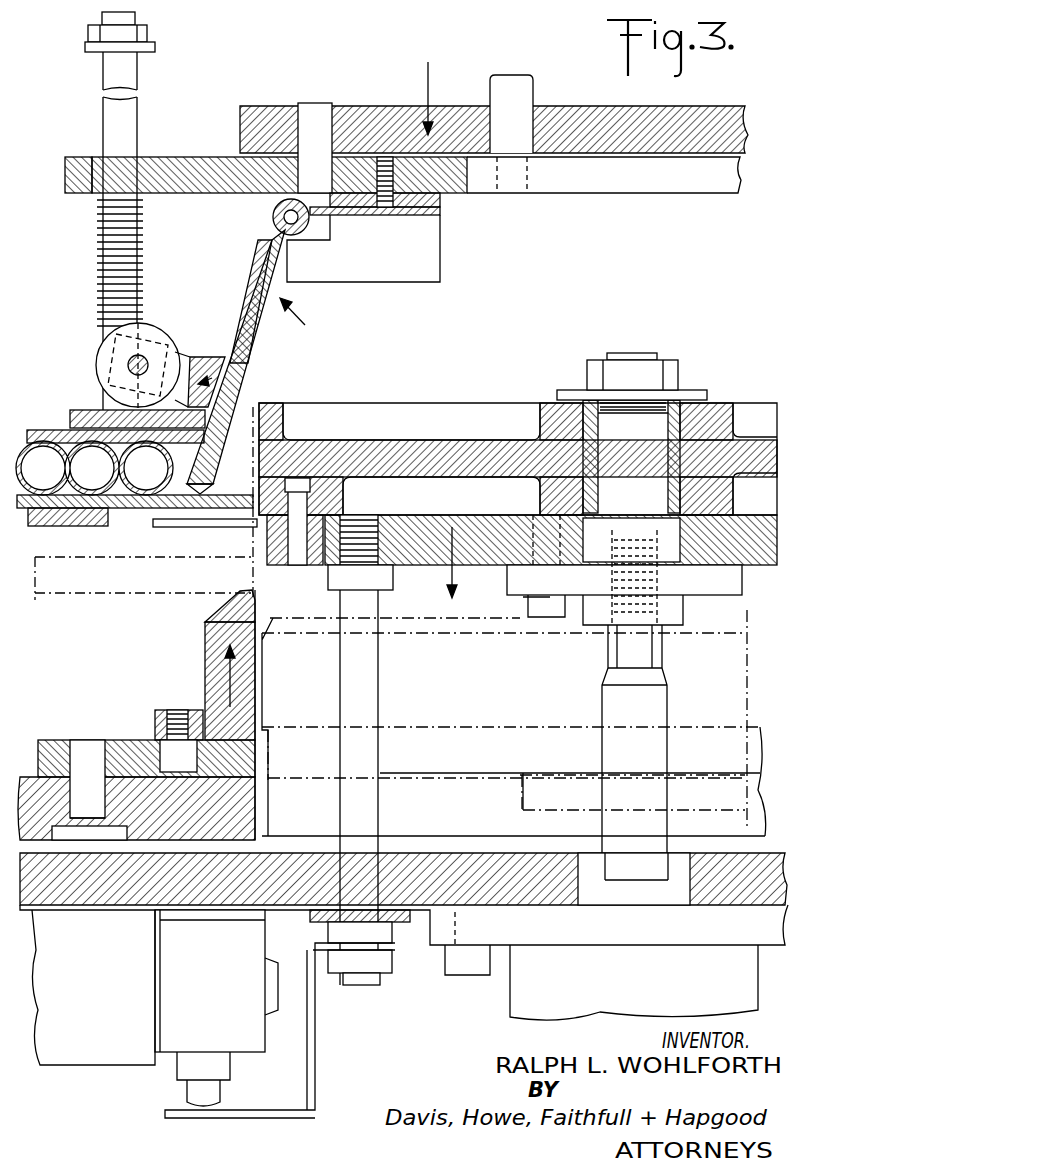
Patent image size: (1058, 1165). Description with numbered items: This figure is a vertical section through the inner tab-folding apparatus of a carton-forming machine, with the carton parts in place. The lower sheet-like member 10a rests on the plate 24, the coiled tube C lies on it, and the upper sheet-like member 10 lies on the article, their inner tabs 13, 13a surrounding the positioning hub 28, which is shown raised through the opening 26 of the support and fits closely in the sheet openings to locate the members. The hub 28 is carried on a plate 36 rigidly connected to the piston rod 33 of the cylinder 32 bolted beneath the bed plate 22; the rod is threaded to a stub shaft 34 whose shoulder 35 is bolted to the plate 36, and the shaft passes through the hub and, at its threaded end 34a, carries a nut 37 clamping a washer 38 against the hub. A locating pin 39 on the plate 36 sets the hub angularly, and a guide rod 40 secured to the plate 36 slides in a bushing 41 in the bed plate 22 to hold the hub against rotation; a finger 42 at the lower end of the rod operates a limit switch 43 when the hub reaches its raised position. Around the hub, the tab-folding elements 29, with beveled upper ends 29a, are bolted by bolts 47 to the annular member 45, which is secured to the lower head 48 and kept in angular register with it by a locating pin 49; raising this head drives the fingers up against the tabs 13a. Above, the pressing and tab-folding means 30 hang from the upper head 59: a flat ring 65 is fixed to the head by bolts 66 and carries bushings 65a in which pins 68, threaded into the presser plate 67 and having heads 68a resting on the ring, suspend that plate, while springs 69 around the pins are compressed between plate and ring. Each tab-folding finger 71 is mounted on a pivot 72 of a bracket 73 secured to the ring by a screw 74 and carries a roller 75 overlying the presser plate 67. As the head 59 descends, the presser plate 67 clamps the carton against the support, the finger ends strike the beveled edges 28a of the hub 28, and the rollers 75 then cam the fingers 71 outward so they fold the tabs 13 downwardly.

The sheet-like member 10 is at (45, 430).
The sheet-like member 10a is at (142, 515).
The inner tab 13 is at (207, 470).
The inner tab 13a is at (222, 519).
The bed plate 22 is at (283, 895).
The plate 24 is at (70, 515).
The opening 26 is at (118, 510).
The positioning hub 28 is at (335, 455).
The beveled edge 28a is at (275, 403).
The tab-folding element 29 is at (210, 642).
The beveled upper end 29a is at (222, 603).
The pressing and tab-folding means 30 is at (265, 342).
The cylinder 32 is at (520, 992).
The piston rod 33 is at (650, 706).
The stub shaft 34 is at (640, 436).
The threaded upper end 34a is at (640, 355).
The shoulder 35 is at (735, 590).
The plate 36 is at (512, 550).
The nut 37 is at (590, 370).
The washer 38 is at (555, 400).
The locating pin 39 is at (294, 565).
The guide rod 40 is at (362, 816).
The bushing 41 is at (412, 908).
The finger 42 is at (258, 1115).
The limit switch 43 is at (240, 1020).
The annular member 45 is at (80, 593).
The bolt 47 is at (180, 712).
The head 48 is at (30, 777).
The locating pin 49 is at (90, 742).
The upper head 59 is at (378, 112).
The flat ring 65 is at (218, 165).
The bushing 65a is at (66, 180).
The bolt 66 is at (532, 92).
The presser plate 67 is at (90, 410).
The pin 68 is at (110, 105).
The head 68a is at (150, 42).
The spring 69 is at (105, 282).
The tab-folding finger 71 is at (252, 270).
The pivot 72 is at (272, 218).
The bracket 73 is at (442, 212).
The screw 74 is at (386, 208).
The roller 75 is at (150, 338).
The coiled tube C is at (75, 430).